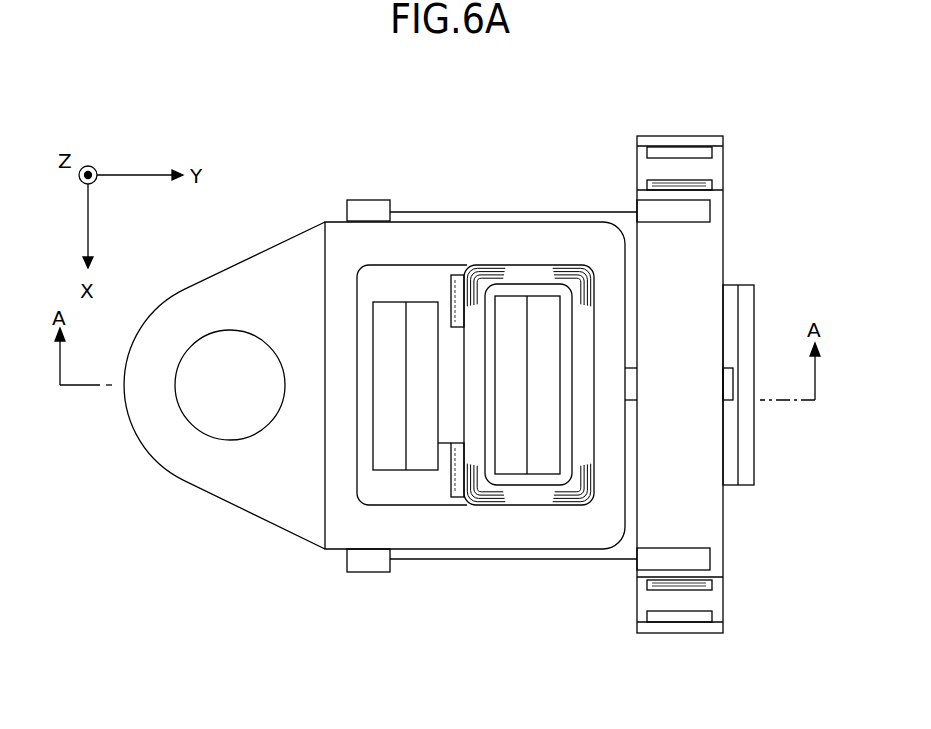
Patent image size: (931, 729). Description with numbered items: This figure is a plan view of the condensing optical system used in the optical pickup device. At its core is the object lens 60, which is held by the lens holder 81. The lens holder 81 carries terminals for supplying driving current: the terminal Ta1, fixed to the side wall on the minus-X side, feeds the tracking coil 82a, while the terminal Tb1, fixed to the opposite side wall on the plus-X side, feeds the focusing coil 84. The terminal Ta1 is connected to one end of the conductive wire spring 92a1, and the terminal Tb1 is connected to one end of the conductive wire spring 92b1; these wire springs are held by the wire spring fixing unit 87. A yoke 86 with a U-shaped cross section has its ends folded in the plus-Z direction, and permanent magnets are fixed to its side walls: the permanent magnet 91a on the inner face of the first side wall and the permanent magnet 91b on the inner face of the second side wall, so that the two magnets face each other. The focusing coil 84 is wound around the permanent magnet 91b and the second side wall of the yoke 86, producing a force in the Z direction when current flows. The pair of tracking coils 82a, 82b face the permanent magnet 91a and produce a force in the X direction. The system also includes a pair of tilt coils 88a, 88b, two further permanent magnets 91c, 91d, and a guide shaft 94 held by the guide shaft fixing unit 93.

The object lens 60 is at (227, 330).
The lens holder 81 is at (260, 247).
The tracking coil 82a is at (462, 275).
The tracking coil 82b is at (458, 497).
The focusing coil 84 is at (557, 265).
The yoke 86 is at (383, 302).
The wire spring fixing unit 87 is at (723, 262).
The tilt coil 88a is at (703, 185).
The tilt coil 88b is at (705, 580).
The permanent magnet 91a is at (430, 302).
The permanent magnet 91b is at (512, 495).
The permanent magnet 91c is at (703, 152).
The permanent magnet 91d is at (705, 615).
The conductive wire spring 92a1 is at (610, 210).
The conductive wire spring 92b1 is at (610, 559).
The guide shaft fixing unit 93 is at (755, 300).
The guide shaft 94 is at (728, 393).
The terminal Ta1 is at (365, 200).
The terminal Tb1 is at (365, 572).